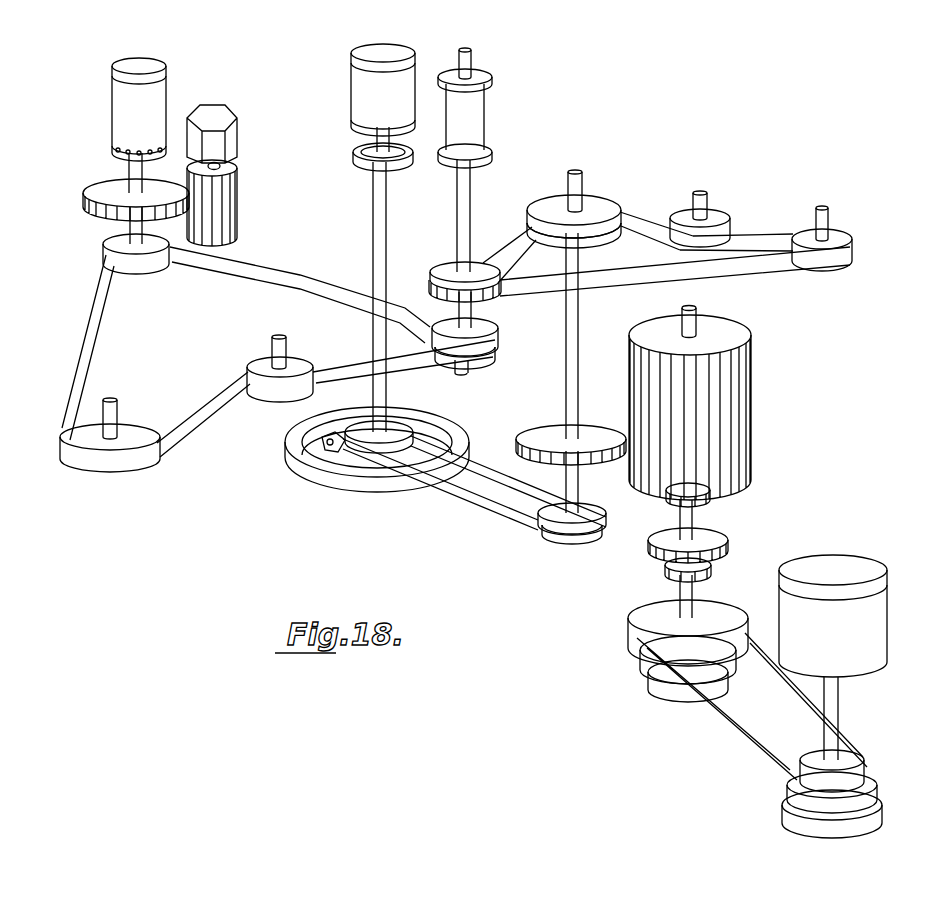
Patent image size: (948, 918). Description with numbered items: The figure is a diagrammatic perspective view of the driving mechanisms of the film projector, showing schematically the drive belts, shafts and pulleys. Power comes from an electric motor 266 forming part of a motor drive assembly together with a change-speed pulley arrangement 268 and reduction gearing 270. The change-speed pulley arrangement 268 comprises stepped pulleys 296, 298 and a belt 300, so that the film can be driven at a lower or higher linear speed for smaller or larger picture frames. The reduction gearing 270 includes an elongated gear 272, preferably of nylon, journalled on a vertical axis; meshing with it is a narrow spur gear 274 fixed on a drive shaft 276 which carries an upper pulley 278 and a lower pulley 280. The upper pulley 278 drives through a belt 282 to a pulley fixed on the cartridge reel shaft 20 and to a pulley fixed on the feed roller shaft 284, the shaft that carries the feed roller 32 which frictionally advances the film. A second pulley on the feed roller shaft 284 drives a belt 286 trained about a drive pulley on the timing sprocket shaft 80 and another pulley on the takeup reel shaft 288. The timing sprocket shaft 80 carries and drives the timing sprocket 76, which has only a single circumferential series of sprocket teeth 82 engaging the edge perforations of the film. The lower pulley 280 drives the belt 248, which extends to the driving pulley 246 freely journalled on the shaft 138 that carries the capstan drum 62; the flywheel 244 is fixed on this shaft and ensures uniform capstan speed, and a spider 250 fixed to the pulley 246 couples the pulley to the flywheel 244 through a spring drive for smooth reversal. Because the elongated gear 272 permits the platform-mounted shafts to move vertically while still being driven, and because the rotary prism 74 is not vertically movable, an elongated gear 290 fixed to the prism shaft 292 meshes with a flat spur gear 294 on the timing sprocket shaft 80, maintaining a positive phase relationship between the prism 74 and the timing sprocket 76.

The cartridge reel shaft 20 is at (830, 225).
The feed roller 32 is at (470, 112).
The capstan drum 62 is at (385, 50).
The rotary prism 74 is at (205, 108).
The timing sprocket 76 is at (131, 64).
The timing sprocket shaft 80 is at (128, 172).
The sprocket teeth 82 is at (110, 146).
The capstan shaft 138 is at (378, 205).
The flywheel 244 is at (352, 490).
The driving pulley 246 is at (398, 427).
The belt 248 is at (478, 498).
The spider 250 is at (333, 432).
The electric motor 266 is at (885, 600).
The change-speed pulley arrangement 268 is at (710, 718).
The reduction gearing 270 is at (748, 495).
The elongated gear 272 is at (745, 370).
The spur gear 274 is at (548, 426).
The drive shaft 276 is at (580, 320).
The upper pulley 278 is at (600, 203).
The lower pulley 280 is at (555, 527).
The belt 282 is at (762, 236).
The feed roller shaft 284 is at (468, 200).
The belt 286 is at (283, 278).
The takeup reel shaft 288 is at (113, 405).
The elongated gear 290 is at (237, 197).
The prism shaft 292 is at (218, 164).
The flat spur gear 294 is at (95, 192).
The stepped pulley 296 is at (855, 752).
The stepped pulley 298 is at (655, 610).
The belt 300 is at (745, 730).